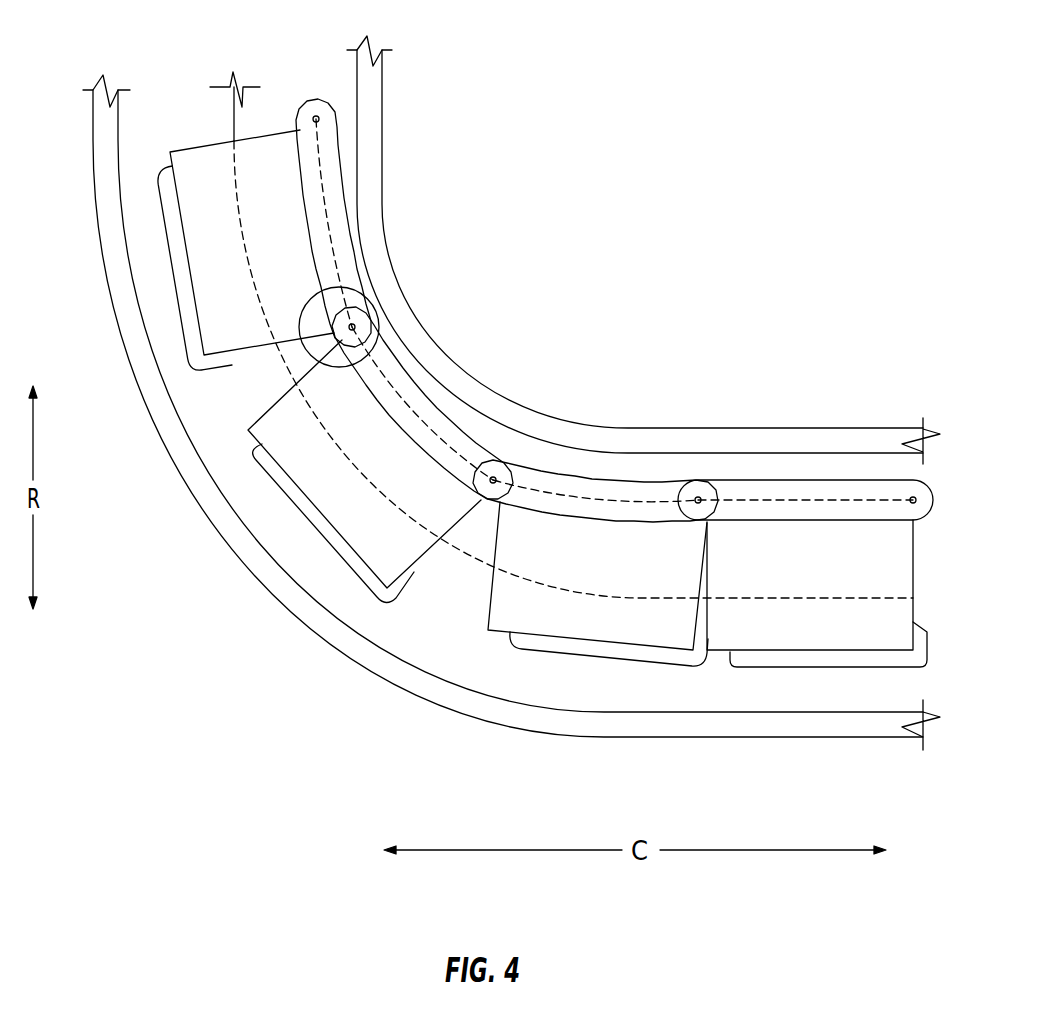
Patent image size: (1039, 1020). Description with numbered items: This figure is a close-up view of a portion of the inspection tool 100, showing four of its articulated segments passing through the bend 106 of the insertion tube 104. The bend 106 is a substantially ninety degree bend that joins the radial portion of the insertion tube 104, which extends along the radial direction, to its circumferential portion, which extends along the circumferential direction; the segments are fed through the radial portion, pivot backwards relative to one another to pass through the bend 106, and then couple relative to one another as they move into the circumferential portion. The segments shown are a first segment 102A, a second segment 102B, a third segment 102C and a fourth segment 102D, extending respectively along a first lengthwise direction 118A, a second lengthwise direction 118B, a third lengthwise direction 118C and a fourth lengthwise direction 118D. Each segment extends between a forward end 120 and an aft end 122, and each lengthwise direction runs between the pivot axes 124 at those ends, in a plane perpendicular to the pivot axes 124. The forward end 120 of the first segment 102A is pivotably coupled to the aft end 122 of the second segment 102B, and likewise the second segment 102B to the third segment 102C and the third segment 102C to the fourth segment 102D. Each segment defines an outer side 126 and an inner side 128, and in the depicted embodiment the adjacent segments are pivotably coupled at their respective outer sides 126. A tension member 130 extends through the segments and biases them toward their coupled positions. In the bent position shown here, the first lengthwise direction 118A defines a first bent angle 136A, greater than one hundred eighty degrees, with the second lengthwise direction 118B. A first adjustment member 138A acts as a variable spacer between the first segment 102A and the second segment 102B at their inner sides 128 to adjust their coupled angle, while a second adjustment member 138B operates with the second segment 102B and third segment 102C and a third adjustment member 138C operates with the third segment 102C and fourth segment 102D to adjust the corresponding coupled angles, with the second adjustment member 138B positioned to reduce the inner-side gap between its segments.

The tool 100 is at (752, 186).
The first segment 102A is at (235, 190).
The second segment 102B is at (409, 458).
The third segment 102C is at (628, 565).
The fourth segment 102D is at (845, 580).
The insertion tube 104 is at (68, 272).
The bend 106 is at (300, 607).
The first lengthwise direction 118A is at (342, 212).
The second lengthwise direction 118B is at (440, 395).
The third lengthwise direction 118C is at (597, 492).
The fourth lengthwise direction 118D is at (833, 497).
The forward end 120 is at (250, 407).
The aft end 122 is at (280, 60).
The pivot axes 124 is at (368, 323).
The outer side 126 is at (345, 158).
The inner side 128 is at (148, 280).
The tension member 130 is at (355, 464).
The first bent angle 136A is at (330, 281).
The first adjustment member 138A is at (167, 250).
The second adjustment member 138B is at (307, 528).
The third adjustment member 138C is at (620, 663).